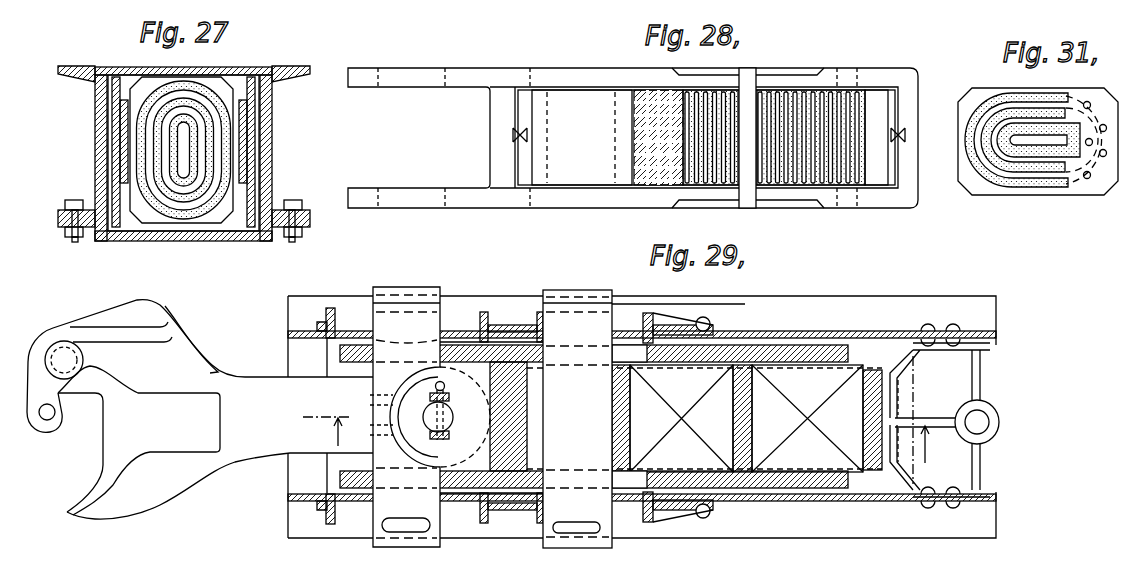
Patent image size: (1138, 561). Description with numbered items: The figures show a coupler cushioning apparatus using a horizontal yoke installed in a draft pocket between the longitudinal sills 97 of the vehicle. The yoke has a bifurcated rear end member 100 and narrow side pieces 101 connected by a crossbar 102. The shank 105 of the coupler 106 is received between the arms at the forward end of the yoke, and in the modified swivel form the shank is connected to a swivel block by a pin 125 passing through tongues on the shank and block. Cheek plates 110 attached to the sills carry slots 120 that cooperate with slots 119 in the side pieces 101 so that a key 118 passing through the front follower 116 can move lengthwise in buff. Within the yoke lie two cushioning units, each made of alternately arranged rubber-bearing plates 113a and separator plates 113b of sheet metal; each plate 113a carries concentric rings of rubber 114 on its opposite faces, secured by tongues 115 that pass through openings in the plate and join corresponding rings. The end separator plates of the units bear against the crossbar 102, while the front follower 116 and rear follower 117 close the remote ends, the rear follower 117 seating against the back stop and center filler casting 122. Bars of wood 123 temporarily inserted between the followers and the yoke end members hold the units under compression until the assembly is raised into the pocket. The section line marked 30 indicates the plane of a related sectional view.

In FIG. 27, the longitudinal sills 97 is at (97, 162).
In FIG. 29, the longitudinal sills 97 is at (909, 313).
In FIG. 29, the rear end member 100 is at (905, 396).
In FIG. 27, the side pieces 101 is at (122, 138).
In FIG. 29, the side pieces 101 is at (825, 347).
In FIG. 28, the crossbar 102 is at (749, 193).
In FIG. 29, the crossbar 102 is at (745, 417).
In FIG. 29, the shank 105 is at (273, 437).
In FIG. 29, the coupler 106 is at (164, 498).
In FIG. 29, the cheek plates 110 is at (497, 318).
In FIG. 27, the rubber-bearing plates 113a is at (230, 98).
In FIG. 28, the rubber-bearing plates 113a is at (637, 190).
In FIG. 31, the rubber-bearing plates 113a is at (979, 190).
In FIG. 28, the separator plates 113b is at (643, 190).
In FIG. 27, the concentric rings of rubber 114 is at (223, 150).
In FIG. 28, the concentric rings of rubber 114 is at (640, 88).
In FIG. 31, the concentric rings of rubber 114 is at (1040, 184).
In FIG. 31, the tongues 115 is at (1088, 178).
In FIG. 28, the front follower 116 is at (576, 173).
In FIG. 29, the front follower 116 is at (623, 417).
In FIG. 28, the rear follower 117 is at (887, 182).
In FIG. 29, the rear follower 117 is at (867, 420).
In FIG. 29, the key 118 is at (562, 290).
In FIG. 29, the slots 119 is at (628, 368).
In FIG. 29, the slots 120 is at (627, 350).
In FIG. 29, the back stop and center filler casting 122 is at (933, 375).
In FIG. 28, the bars of wood 123 is at (513, 136).
In FIG. 29, the pin 125 is at (452, 413).
In FIG. 29, the section line 30- 30 is at (629, 420).